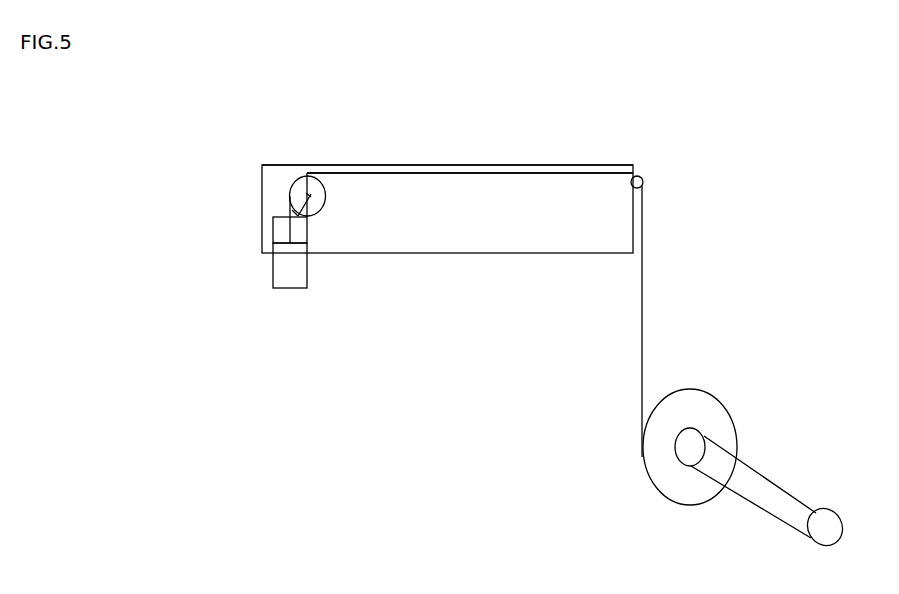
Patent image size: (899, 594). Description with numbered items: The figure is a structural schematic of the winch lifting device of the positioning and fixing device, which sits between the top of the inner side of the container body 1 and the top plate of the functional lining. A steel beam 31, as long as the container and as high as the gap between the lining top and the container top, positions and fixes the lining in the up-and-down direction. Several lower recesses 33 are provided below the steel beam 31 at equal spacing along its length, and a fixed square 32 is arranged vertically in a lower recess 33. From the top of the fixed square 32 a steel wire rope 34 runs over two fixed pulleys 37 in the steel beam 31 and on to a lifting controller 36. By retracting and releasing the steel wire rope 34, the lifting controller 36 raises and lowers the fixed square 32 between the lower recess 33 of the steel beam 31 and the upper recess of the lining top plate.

The container body 1 is at (470, 244).
The steel beam 31 is at (483, 235).
The fixed square 32 is at (287, 278).
The lower recess 33 is at (283, 228).
The steel wire rope 34 is at (412, 173).
The lifting controller 36 is at (703, 407).
The fixed pulley 37 is at (303, 175).